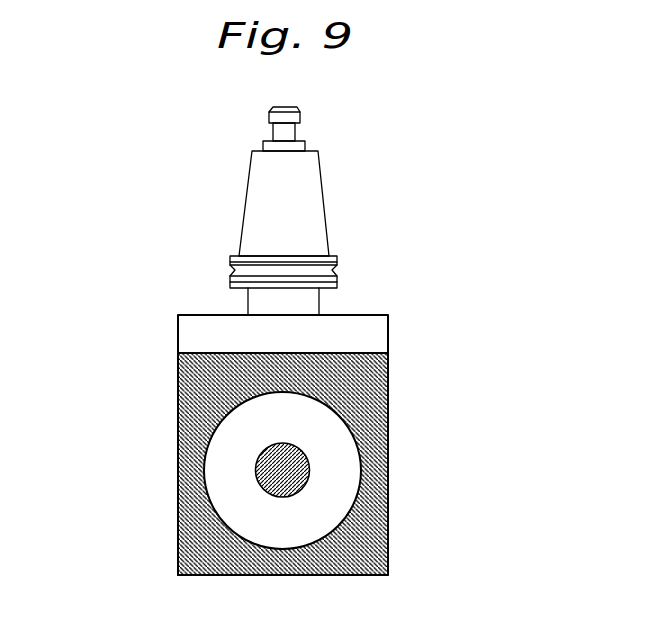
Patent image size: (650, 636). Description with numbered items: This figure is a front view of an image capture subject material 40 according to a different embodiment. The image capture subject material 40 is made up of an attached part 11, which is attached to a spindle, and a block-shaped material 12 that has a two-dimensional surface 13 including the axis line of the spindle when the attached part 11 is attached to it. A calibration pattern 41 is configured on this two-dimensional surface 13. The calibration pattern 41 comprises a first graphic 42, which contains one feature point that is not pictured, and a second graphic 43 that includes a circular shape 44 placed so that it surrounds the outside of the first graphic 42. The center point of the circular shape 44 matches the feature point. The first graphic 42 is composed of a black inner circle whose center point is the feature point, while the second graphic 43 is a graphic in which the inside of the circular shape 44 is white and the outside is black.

The image capture subject material 40 is at (123, 192).
The attached part 11 is at (313, 218).
The block-shaped material 12 is at (382, 337).
The two-dimensional surface 13 is at (365, 397).
The calibration pattern 41 is at (167, 395).
The first graphic 42 is at (257, 472).
The second graphic 43 is at (398, 540).
The circular shape 44 is at (342, 495).